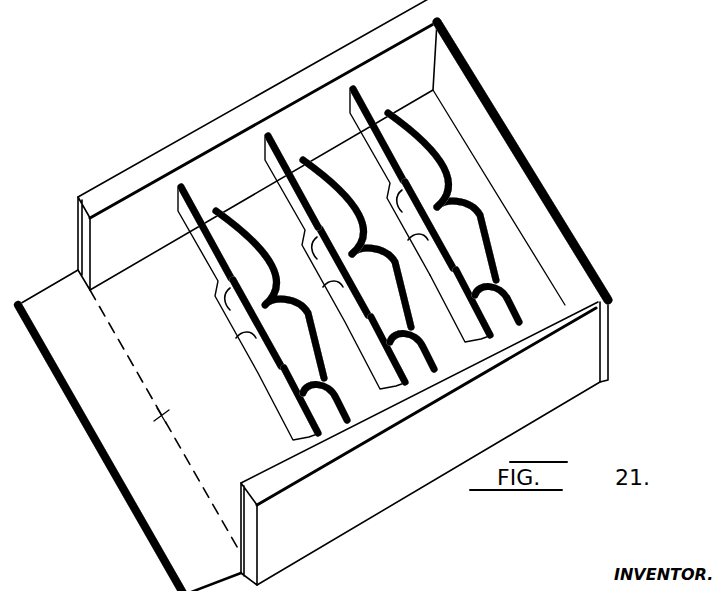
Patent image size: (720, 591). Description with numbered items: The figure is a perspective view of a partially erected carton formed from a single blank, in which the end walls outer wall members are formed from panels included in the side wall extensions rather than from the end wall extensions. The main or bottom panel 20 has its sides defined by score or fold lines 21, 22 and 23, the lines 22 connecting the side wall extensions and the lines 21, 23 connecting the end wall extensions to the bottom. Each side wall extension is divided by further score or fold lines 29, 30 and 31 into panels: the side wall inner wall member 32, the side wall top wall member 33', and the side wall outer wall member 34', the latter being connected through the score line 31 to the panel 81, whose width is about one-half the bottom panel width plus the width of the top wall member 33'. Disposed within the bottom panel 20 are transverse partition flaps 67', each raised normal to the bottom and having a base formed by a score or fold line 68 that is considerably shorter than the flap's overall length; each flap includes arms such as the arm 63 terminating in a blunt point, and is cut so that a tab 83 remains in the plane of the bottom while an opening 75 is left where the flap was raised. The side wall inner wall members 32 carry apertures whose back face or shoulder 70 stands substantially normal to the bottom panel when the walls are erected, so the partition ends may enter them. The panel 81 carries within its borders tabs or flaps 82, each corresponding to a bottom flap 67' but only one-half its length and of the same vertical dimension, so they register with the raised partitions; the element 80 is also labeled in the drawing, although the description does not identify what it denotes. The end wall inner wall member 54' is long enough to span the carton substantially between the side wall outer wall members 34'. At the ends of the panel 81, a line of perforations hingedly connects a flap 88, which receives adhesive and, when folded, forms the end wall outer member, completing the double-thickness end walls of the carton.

The main or bottom panel 20 is at (129, 430).
The score or fold line 21 is at (165, 421).
The score or fold line 22 is at (331, 262).
The score or fold line 23 is at (420, 160).
The score or fold line 29 is at (327, 218).
The score or fold line 30 is at (338, 252).
The score or fold line 31 is at (428, 483).
The side wall inner wall member 32 is at (118, 243).
The side wall top wall member 33' is at (504, 197).
The side wall outer wall member 34' is at (294, 514).
The end wall inner wall member 54' is at (327, 305).
The arm 63 is at (434, 212).
The transverse partition flap 67' is at (401, 232).
The score or fold line 68 is at (471, 306).
The back face or shoulder 70 is at (273, 181).
The opening 75 is at (270, 294).
The intermediate rail 80 is at (425, 225).
The panel 81 is at (333, 207).
The tab or flap 82 is at (378, 131).
The tab 83 is at (262, 313).
The flap 88 is at (325, 445).